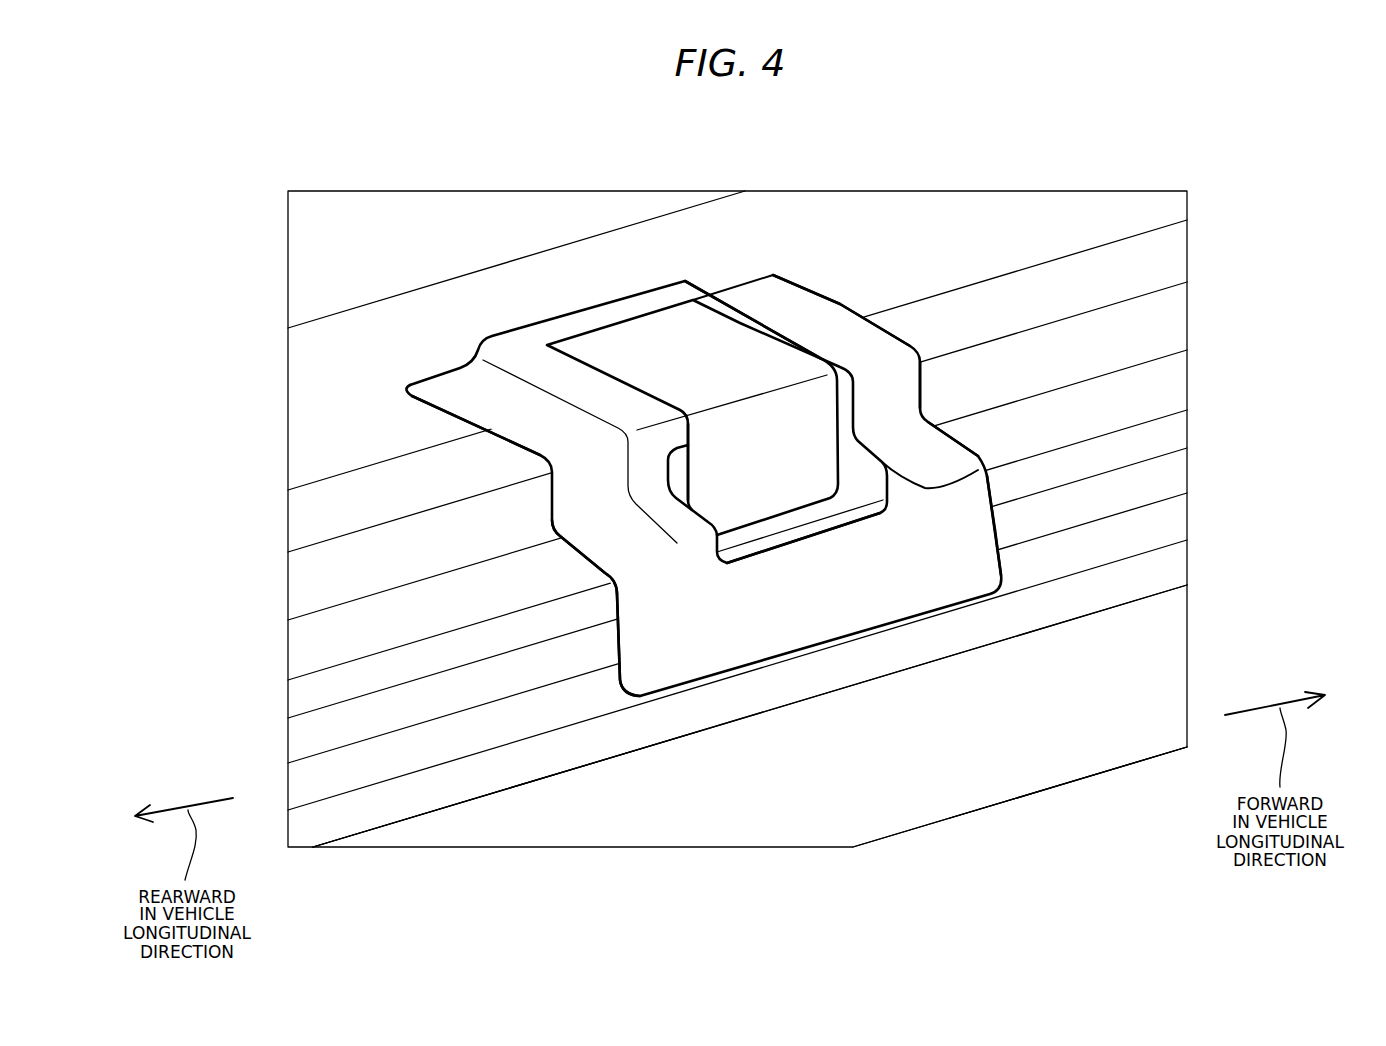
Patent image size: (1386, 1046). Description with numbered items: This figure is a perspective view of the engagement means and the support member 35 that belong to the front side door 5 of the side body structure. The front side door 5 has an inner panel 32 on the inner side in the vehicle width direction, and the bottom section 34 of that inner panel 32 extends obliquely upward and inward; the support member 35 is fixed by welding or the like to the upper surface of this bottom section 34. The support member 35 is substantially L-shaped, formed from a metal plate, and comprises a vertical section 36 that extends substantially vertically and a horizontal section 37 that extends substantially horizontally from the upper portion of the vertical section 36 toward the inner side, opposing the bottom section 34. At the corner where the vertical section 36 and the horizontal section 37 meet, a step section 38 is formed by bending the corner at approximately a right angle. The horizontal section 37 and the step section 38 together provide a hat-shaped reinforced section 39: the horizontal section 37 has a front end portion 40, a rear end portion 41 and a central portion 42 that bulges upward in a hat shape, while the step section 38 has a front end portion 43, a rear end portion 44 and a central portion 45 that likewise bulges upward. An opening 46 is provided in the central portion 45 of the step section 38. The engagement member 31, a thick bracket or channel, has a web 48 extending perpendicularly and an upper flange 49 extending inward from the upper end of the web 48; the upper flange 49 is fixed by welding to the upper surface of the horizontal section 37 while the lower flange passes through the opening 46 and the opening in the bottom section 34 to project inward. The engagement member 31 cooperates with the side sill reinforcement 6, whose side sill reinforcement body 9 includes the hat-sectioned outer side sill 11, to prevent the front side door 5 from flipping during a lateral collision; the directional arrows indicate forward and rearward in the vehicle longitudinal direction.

The front side door 5 is at (698, 730).
The side sill reinforcement 6 is at (1113, 771).
The side sill reinforcement body 9 is at (1007, 802).
The outer side sill 11 is at (913, 828).
The engagement member 31 is at (675, 300).
The inner panel 32 is at (582, 768).
The bottom section 34 is at (288, 460).
The support member 35 is at (1003, 554).
The vertical section 36 is at (1000, 514).
The horizontal section 37 is at (873, 318).
The step section 38 is at (925, 405).
The reinforced section 39 is at (900, 462).
The front end portion 40 is at (878, 322).
The rear end portion 41 is at (423, 400).
The central portion 42 is at (620, 432).
The front end portion 43 is at (930, 428).
The rear end portion 44 is at (600, 583).
The central portion 45 is at (678, 527).
The opening 46 is at (717, 562).
The web 48 is at (688, 487).
The upper flange 49 is at (582, 326).